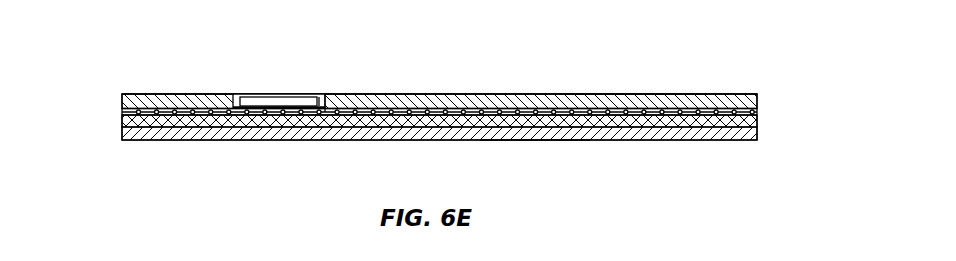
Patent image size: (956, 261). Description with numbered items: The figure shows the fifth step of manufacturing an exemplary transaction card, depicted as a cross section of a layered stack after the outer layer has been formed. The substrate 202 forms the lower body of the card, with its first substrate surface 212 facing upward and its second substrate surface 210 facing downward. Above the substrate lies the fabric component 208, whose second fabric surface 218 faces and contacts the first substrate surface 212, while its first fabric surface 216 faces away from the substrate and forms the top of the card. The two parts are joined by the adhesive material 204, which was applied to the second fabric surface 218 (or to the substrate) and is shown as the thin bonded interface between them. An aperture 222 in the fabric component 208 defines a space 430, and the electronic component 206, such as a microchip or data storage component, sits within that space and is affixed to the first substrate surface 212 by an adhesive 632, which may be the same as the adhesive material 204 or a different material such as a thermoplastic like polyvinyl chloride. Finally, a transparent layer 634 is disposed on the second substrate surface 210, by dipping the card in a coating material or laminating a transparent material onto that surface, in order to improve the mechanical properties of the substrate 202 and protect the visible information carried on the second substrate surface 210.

The substrate component 202 is at (122, 105).
The adhesive material 204 is at (757, 112).
The electronic component 206 is at (254, 101).
The fabric component 208 is at (122, 139).
The second substrate surface 210 is at (597, 140).
The first substrate surface 212 is at (367, 126).
The first fabric surface 216 is at (610, 94).
The second fabric surface 218 is at (538, 99).
The aperture 222 is at (323, 112).
The space 430 is at (319, 103).
The adhesive 632 is at (238, 112).
The transparent layer 634 is at (532, 140).